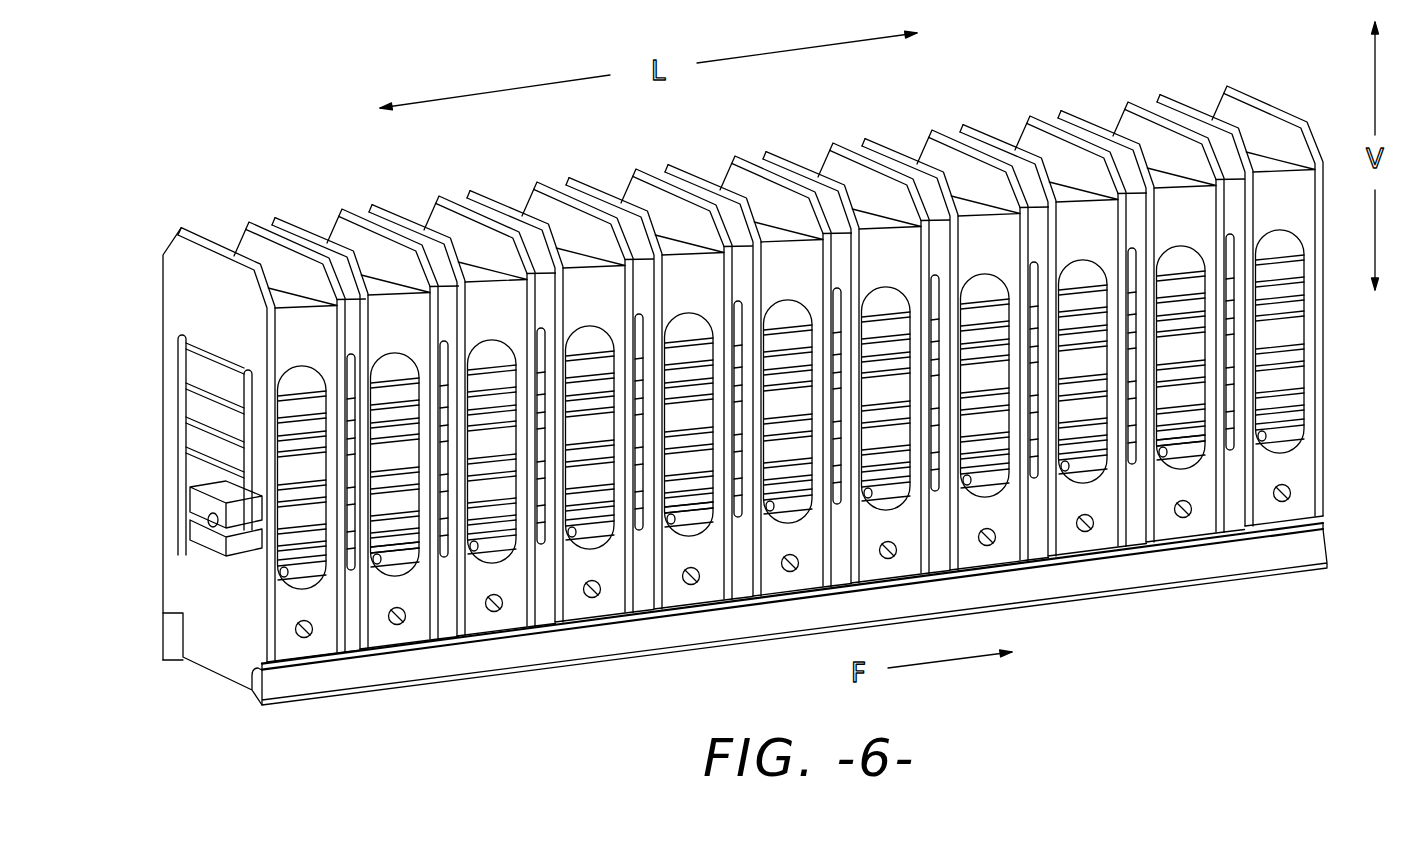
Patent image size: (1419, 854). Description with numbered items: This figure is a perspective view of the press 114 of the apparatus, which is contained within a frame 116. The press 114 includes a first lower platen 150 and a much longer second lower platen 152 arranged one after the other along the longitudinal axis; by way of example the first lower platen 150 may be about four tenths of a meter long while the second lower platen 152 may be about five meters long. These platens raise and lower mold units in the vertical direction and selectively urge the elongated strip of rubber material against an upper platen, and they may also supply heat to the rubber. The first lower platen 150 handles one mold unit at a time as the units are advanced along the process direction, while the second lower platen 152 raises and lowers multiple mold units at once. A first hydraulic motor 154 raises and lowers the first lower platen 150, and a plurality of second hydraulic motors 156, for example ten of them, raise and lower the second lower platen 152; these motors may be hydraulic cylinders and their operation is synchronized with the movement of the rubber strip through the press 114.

The press 114 is at (753, 389).
The frame 116 is at (1138, 125).
The first lower platen 150 is at (198, 453).
The second lower platen 152 is at (477, 447).
The first hydraulic motor 154 is at (283, 520).
The second hydraulic motors 156 is at (390, 553).